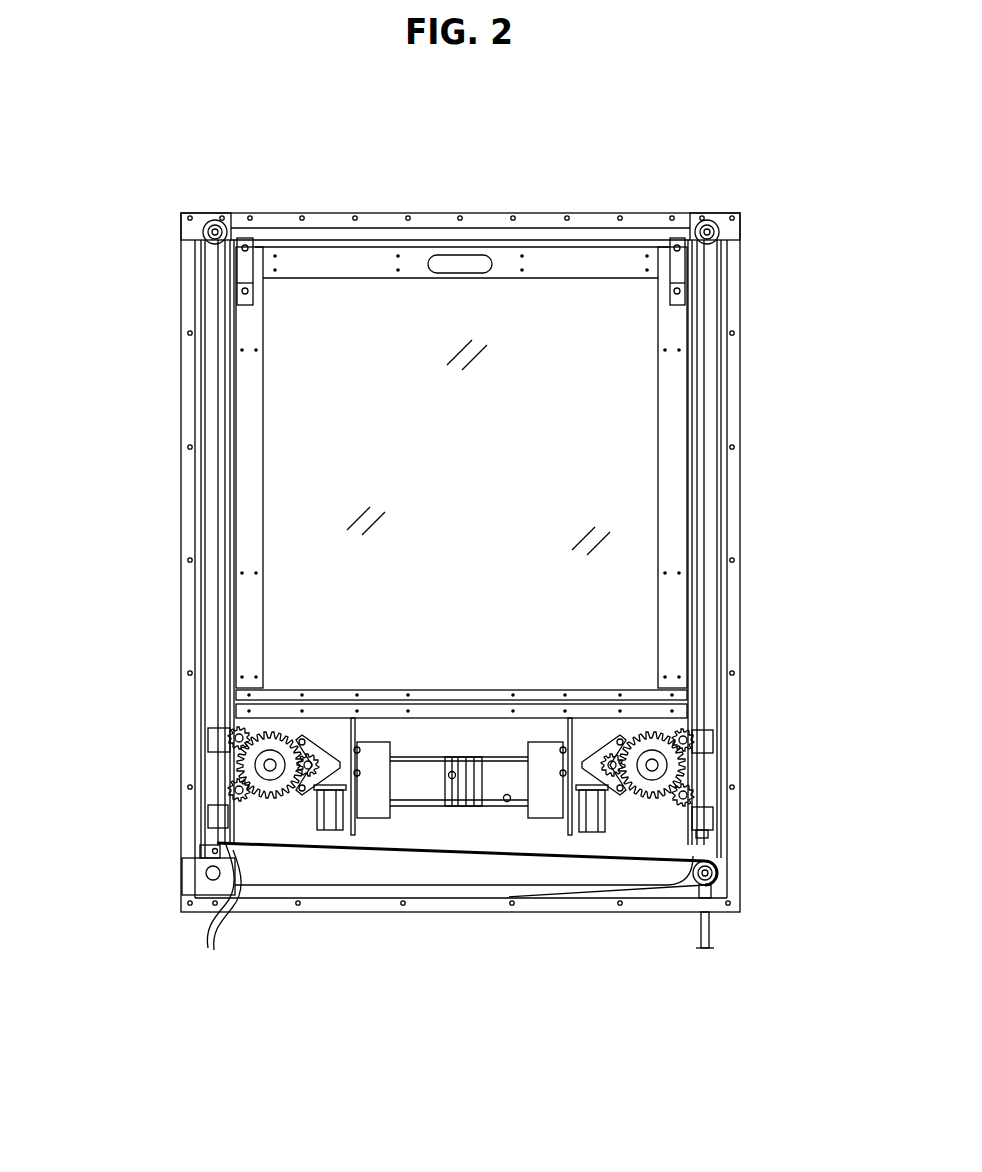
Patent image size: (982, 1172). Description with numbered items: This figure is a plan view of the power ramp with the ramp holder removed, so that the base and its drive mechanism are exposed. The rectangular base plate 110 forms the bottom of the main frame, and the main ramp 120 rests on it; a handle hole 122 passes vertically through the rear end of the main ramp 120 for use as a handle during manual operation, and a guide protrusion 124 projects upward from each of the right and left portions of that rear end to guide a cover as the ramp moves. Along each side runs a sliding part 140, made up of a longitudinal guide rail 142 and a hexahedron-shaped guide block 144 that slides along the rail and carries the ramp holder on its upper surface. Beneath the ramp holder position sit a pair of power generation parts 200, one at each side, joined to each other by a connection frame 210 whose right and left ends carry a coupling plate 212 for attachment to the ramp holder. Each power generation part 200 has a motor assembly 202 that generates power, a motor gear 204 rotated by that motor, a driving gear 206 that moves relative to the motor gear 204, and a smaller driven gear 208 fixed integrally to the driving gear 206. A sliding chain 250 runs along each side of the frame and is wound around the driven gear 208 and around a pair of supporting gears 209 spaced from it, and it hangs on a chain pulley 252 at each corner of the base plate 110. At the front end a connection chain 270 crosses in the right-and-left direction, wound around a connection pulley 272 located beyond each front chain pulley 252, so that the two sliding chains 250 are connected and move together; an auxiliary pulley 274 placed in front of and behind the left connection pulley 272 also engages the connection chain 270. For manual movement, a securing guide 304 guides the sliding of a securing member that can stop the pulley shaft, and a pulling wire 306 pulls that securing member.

The base plate 110 is at (472, 830).
The main ramp 120 is at (548, 297).
The handle hole 122 is at (468, 255).
The guide protrusion 124 is at (670, 265).
The sliding part 140 is at (456, 542).
The guide rail 142 is at (222, 620).
The guide block 144 is at (212, 735).
The power generation part 200 is at (458, 909).
The motor assembly 202 is at (335, 805).
The motor gear 204 is at (305, 796).
The driving gear 206 is at (272, 792).
The driven gear 208 is at (241, 801).
The supporting gear 209 is at (240, 762).
The connection frame 210 is at (432, 757).
The coupling plate 212 is at (380, 745).
The sliding chain 250 is at (200, 297).
The chain pulley 252 is at (203, 244).
The connection chain 270 is at (595, 893).
The connection pulley 272 is at (218, 876).
The auxiliary pulley 274 is at (206, 912).
The securing guide 304 is at (718, 889).
The pulling wire 306 is at (712, 930).